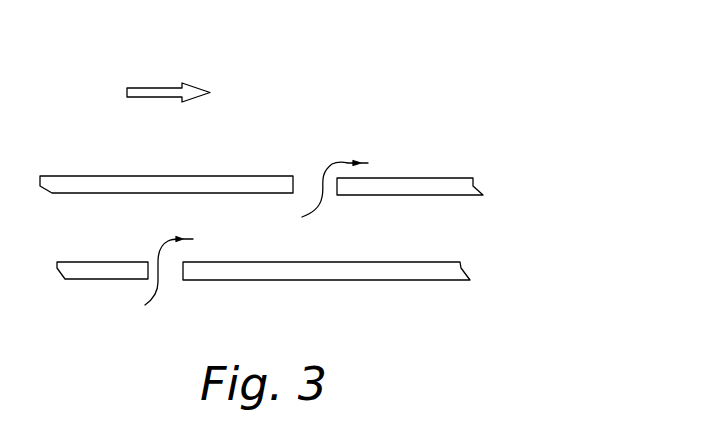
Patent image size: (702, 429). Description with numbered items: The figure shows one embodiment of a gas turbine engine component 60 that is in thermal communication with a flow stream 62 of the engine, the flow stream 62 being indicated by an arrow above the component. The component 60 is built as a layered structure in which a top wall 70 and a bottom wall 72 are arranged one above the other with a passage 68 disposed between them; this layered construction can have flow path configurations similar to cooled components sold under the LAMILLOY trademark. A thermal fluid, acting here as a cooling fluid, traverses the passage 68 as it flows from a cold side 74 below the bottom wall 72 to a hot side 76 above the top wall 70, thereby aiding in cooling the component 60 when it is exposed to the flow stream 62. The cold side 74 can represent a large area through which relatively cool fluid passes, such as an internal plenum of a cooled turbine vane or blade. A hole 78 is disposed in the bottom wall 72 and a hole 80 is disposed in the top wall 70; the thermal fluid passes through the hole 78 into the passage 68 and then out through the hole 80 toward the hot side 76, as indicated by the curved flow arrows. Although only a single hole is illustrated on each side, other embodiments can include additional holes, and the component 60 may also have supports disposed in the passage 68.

The component 60 is at (447, 91).
The flow stream 62 is at (155, 88).
The passage 68 is at (114, 236).
The top wall 70 is at (430, 178).
The bottom wall 72 is at (417, 281).
The cold side 74 is at (277, 336).
The hot side 76 is at (333, 117).
The hole 78 is at (166, 266).
The hole 80 is at (316, 189).